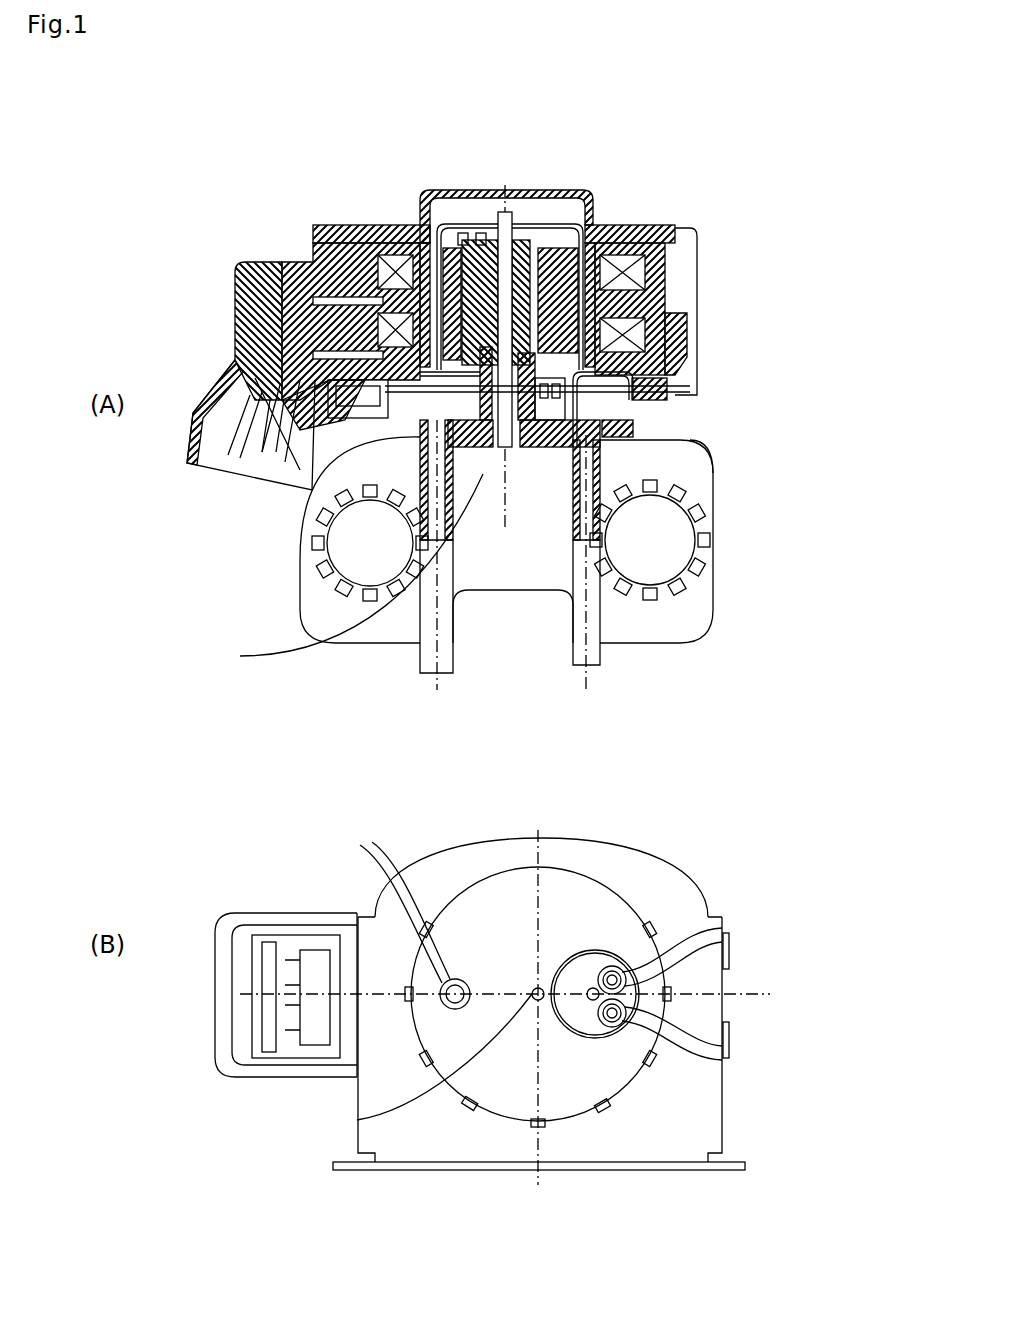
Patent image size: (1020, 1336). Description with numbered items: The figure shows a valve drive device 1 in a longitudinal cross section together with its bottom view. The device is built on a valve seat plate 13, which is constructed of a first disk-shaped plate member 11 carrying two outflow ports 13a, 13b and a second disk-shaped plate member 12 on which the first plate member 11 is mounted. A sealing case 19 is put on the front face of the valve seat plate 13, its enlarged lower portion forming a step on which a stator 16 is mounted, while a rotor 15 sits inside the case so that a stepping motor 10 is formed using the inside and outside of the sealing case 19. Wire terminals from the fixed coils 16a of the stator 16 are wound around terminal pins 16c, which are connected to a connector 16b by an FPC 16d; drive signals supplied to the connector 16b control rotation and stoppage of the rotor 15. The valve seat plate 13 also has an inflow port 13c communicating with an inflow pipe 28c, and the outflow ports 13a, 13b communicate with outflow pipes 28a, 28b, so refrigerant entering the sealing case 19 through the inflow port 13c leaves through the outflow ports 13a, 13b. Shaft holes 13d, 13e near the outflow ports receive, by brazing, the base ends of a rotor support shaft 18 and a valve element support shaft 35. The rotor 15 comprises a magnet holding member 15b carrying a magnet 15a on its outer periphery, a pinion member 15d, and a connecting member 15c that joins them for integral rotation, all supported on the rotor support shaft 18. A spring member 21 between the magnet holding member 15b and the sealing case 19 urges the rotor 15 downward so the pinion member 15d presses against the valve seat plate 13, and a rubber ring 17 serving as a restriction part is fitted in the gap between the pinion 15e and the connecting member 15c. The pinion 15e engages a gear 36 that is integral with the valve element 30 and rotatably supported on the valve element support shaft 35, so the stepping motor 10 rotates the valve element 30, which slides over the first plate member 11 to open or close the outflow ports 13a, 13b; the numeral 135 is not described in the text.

The valve drive device 1 is at (255, 174).
The stepping motor 10 is at (714, 140).
The first disk-shaped plate member 11 is at (450, 600).
The second disk-shaped plate member 12 is at (430, 570).
The valve seat plate 13 is at (318, 698).
The outflow port 13a is at (697, 508).
The outflow port 13b is at (630, 1018).
The inflow port 13c is at (420, 450).
The shaft hole 13d is at (493, 448).
The shaft hole 13e is at (512, 510).
The rotor 15 is at (570, 238).
The magnet 15a is at (468, 240).
The magnet holding member 15b is at (482, 240).
The connecting member 15c is at (440, 450).
The pinion member 15d is at (480, 470).
The pinion 15e is at (361, 565).
The stator 16 is at (640, 232).
The fixed coils 16a is at (615, 333).
The connector 16b is at (243, 470).
The terminal pins 16c is at (330, 420).
The FPC 16d is at (317, 337).
The rubber ring 17 is at (465, 470).
The rotor support shaft 18 is at (525, 220).
The sealing case 19 is at (598, 205).
The spring member 21 is at (514, 218).
The outflow pipe 28a is at (586, 580).
The outflow pipe 28b is at (437, 580).
The inflow pipe 28c is at (493, 470).
The valve element 30 is at (690, 440).
The valve element support shaft 35 is at (650, 382).
The gear 36 is at (640, 396).
The recess 135 is at (650, 460).